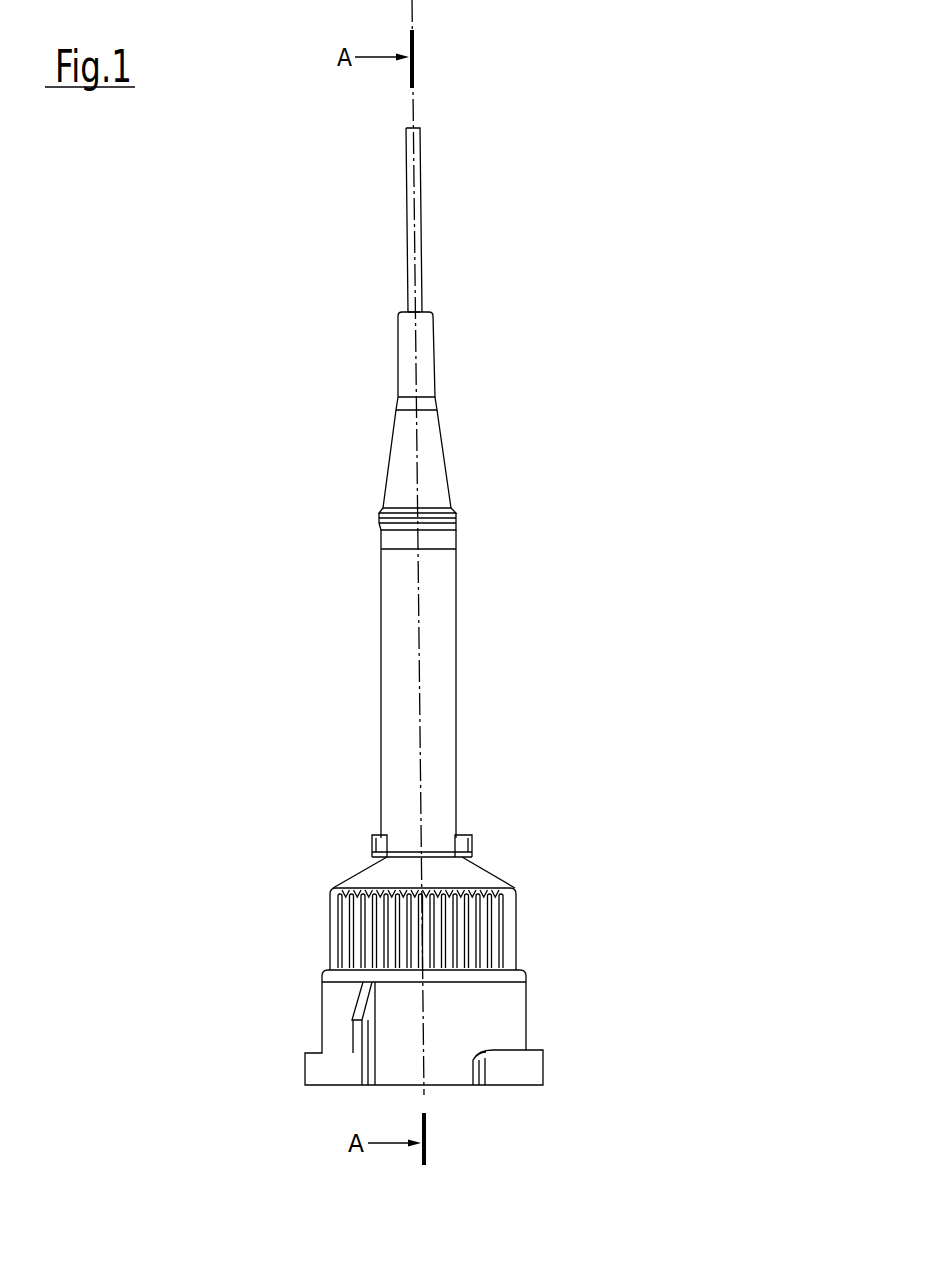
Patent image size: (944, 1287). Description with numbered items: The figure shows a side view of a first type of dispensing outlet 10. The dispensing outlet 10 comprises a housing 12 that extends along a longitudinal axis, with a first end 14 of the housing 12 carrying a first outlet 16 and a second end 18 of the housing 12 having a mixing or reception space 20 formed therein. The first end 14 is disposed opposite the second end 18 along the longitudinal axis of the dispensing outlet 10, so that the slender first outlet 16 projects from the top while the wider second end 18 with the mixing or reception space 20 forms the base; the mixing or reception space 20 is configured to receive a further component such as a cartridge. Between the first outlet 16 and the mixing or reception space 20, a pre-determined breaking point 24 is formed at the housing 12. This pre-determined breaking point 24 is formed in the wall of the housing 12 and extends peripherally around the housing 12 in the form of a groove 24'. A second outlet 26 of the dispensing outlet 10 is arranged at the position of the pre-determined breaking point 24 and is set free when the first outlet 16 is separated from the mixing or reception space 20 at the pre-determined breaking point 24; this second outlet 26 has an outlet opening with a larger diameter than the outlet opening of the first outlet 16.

The dispensing outlet 10 is at (678, 87).
The housing 12 is at (433, 663).
The first end 14 is at (421, 325).
The first outlet 16 is at (420, 126).
The second end 18 is at (495, 998).
The mixing or reception space 20 is at (437, 836).
The pre-determined breaking point 24 is at (336, 470).
The groove 24' is at (417, 470).
The second outlet 26 is at (382, 517).